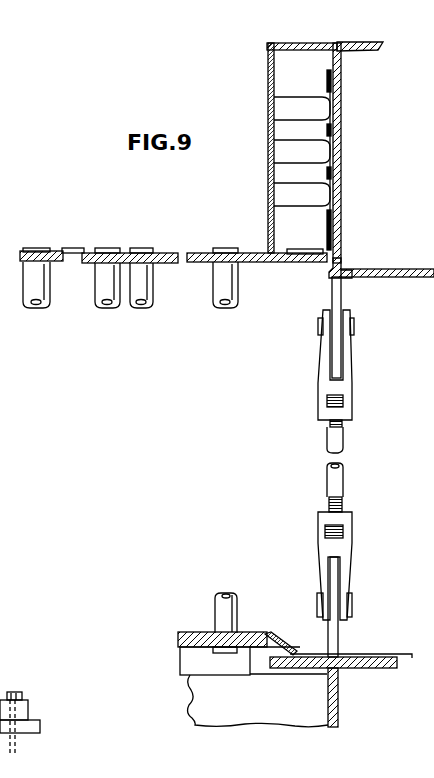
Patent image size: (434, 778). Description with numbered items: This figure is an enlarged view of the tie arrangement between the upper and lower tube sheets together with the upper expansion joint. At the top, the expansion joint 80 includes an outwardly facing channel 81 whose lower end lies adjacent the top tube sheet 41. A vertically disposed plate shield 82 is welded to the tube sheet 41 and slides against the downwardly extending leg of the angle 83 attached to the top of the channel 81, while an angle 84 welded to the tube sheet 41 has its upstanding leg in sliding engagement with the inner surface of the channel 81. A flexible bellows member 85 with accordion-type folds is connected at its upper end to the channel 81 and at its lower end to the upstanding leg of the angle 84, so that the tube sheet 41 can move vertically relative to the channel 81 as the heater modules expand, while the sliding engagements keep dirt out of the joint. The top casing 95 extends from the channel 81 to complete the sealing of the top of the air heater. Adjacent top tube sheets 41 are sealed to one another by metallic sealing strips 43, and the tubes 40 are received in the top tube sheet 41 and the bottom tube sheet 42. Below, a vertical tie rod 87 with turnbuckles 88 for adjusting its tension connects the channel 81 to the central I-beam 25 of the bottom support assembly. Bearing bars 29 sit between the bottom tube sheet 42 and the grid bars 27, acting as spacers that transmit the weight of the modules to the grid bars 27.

The expansion joint 80 is at (252, 104).
The channel 81 is at (342, 132).
The plate shield 82 is at (270, 133).
The angle 83 is at (312, 42).
The angle 84 is at (312, 250).
The flexible bellows member 85 is at (302, 157).
The top casing 95 is at (404, 268).
The top tube sheet 41 is at (36, 251).
The sealing strip 43 is at (88, 250).
The tube 40 is at (142, 293).
The turnbuckle 88 is at (352, 400).
The vertical tie rod 87 is at (340, 493).
The bottom tube sheet 42 is at (196, 635).
The bearing bar 29 is at (190, 660).
The central I-beam 25 is at (340, 702).
The grid bar 27 is at (238, 705).